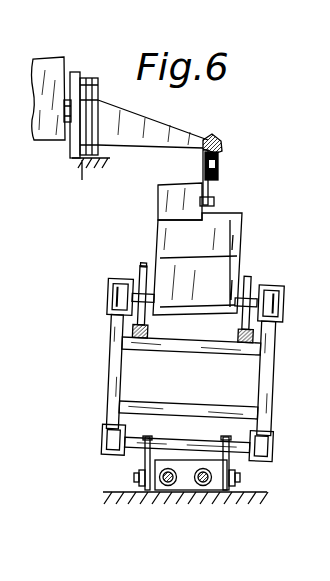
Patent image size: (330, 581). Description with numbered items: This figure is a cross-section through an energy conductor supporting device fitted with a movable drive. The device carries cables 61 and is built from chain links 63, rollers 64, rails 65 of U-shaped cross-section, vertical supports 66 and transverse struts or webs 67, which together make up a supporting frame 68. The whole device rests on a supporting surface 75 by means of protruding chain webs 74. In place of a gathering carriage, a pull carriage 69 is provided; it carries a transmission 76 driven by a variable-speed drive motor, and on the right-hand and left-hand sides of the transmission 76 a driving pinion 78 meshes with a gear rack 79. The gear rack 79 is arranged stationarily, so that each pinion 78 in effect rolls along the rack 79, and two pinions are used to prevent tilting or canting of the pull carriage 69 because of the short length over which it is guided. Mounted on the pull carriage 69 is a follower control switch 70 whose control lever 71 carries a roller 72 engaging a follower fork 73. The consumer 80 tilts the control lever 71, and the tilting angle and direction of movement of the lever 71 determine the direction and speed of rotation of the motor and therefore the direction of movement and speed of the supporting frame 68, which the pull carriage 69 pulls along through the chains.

The cables 61 is at (207, 480).
The chain links 63 is at (240, 479).
The rollers 64 is at (274, 460).
The rails 65 is at (275, 440).
The vertical supports 66 is at (272, 385).
The transverse struts 67 is at (180, 343).
The supporting frame 68 is at (46, 290).
The pull carriage 69 is at (230, 237).
The follower control switch 70 is at (203, 214).
The control lever 71 is at (216, 199).
The roller 72 is at (219, 166).
The follower fork 73 is at (215, 142).
The chain webs 74 is at (188, 462).
The supporting surface 75 is at (120, 490).
The transmission 76 is at (222, 277).
The driving pinion 78 is at (140, 280).
The gear rack 79 is at (135, 328).
The consumer 80 is at (57, 130).